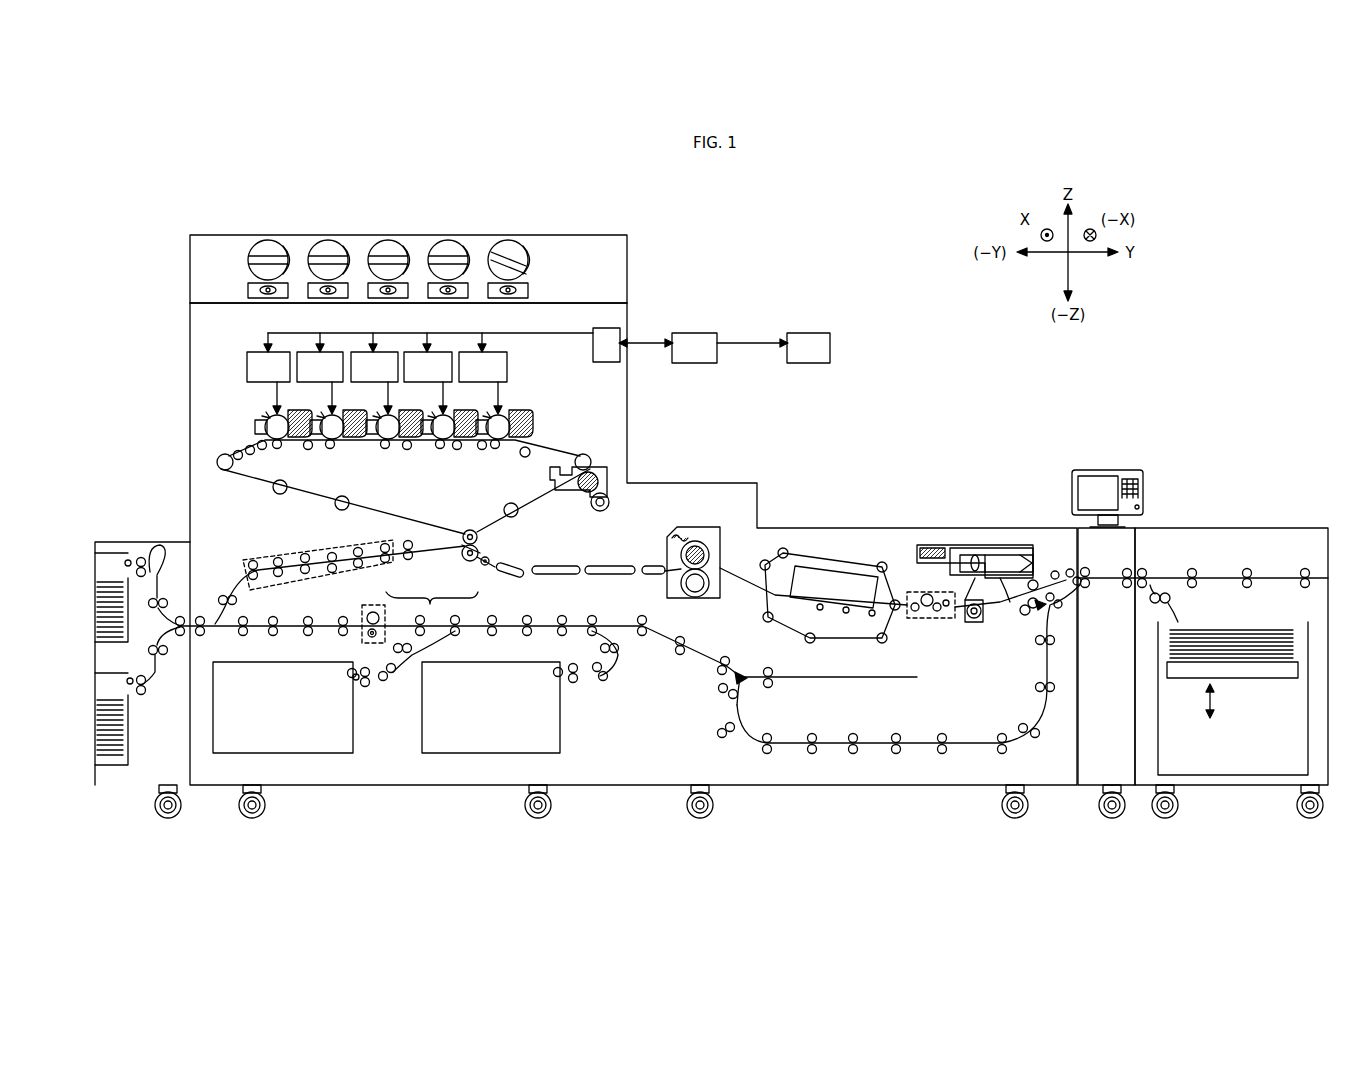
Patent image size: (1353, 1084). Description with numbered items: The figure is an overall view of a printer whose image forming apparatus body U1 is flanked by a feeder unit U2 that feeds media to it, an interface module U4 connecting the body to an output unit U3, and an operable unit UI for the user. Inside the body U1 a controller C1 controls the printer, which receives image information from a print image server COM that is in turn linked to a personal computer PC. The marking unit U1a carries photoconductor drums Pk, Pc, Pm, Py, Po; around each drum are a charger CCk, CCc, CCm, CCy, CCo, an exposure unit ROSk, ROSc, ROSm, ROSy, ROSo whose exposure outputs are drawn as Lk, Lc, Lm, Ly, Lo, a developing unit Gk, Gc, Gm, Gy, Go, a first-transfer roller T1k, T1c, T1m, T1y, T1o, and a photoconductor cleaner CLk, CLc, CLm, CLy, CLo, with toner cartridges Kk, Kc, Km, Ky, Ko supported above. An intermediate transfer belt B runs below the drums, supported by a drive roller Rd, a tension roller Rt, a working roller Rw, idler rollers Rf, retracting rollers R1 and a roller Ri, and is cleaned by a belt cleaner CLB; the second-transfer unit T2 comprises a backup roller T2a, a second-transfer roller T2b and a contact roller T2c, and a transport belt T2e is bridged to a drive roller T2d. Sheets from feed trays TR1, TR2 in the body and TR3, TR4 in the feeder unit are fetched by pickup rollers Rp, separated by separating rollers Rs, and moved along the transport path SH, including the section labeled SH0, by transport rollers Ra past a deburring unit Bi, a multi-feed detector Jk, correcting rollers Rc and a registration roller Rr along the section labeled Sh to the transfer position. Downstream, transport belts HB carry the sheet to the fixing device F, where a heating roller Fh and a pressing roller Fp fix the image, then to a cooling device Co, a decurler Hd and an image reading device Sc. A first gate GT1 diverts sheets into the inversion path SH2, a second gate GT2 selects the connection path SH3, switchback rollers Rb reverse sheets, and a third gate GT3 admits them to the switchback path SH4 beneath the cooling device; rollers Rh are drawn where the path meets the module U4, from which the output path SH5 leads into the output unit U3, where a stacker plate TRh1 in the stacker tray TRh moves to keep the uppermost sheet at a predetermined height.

The image forming apparatus body U1 is at (666, 266).
The marking unit U1a is at (198, 355).
The feeder unit U2 is at (130, 535).
The output unit U3 is at (1240, 530).
The interface module U4 is at (1132, 532).
The controller C1 is at (616, 334).
The print image server COM is at (704, 340).
The personal computer PC is at (820, 338).
The operable unit UI is at (1100, 468).
The toner cartridge Kk is at (268, 246).
The toner cartridge Kc is at (328, 246).
The toner cartridge Km is at (388, 246).
The toner cartridge Ky is at (448, 246).
The toner cartridge Ko is at (508, 246).
The exposure unit ROSk is at (252, 350).
The exposure unit ROSc is at (303, 350).
The exposure unit ROSm is at (358, 350).
The exposure unit ROSy is at (412, 350).
The exposure unit ROSo is at (468, 350).
The laser beam (black) Lk is at (274, 363).
The laser beam (cyan) Lc is at (328, 363).
The laser beam (magenta) Lm is at (385, 363).
The laser beam (yellow) Ly is at (438, 363).
The laser beam (clear) Lo is at (496, 363).
The photoconductor drum Pk is at (281, 414).
The photoconductor drum Pc is at (336, 414).
The photoconductor drum Pm is at (391, 414).
The photoconductor drum Py is at (446, 414).
The photoconductor drum Po is at (501, 414).
The charger CCk is at (267, 417).
The charger CCc is at (322, 417).
The charger CCm is at (378, 417).
The charger CCy is at (433, 417).
The charger CCo is at (488, 417).
The photoconductor cleaner CLk is at (254, 428).
The photoconductor cleaner CLc is at (318, 436).
The photoconductor cleaner CLm is at (373, 436).
The photoconductor cleaner CLy is at (428, 436).
The photoconductor cleaner CLo is at (508, 432).
The developing unit Gk is at (299, 439).
The developing unit Gc is at (355, 439).
The developing unit Gm is at (411, 439).
The developing unit Gy is at (466, 439).
The developing unit Go is at (523, 416).
The first-transfer roller T1k is at (274, 450).
The first-transfer roller T1c is at (331, 450).
The first-transfer roller T1m is at (386, 450).
The first-transfer roller T1y is at (440, 450).
The first-transfer roller T1o is at (496, 450).
The intermediate transfer belt B is at (406, 520).
The drive roller Rd is at (592, 462).
The tension roller Rt is at (217, 458).
The working roller Rw is at (349, 505).
The idler roller Rf is at (519, 511).
The idler roller Ri is at (224, 472).
The retracting roller R1 is at (262, 451).
The belt cleaner CLB is at (573, 506).
The second-transfer unit T2 is at (432, 606).
The backup roller T2a is at (465, 548).
The second-transfer roller T2b is at (462, 569).
The contact roller T2c is at (462, 540).
The drive roller T2d is at (485, 568).
The transport belt T2e is at (480, 555).
The sheet transport path Sh is at (341, 550).
The multi-feed detector Jk is at (243, 558).
The transport roller Ra is at (238, 601).
The correcting roller Rc is at (346, 570).
The registration roller Rr is at (387, 592).
The deburring unit Bi is at (361, 640).
The transport path SH is at (178, 612).
The feed transport path SH0 is at (232, 633).
The inversion path SH2 is at (1046, 686).
The connection path SH3 is at (1062, 614).
The switchback path SH4 is at (845, 679).
The output path SH5 is at (1160, 574).
The separating roller Rs is at (148, 556).
The pickup roller Rp is at (124, 564).
The feed tray TR1 is at (305, 756).
The feed tray TR2 is at (480, 756).
The feed tray TR3 is at (98, 770).
The feed tray TR4 is at (98, 632).
The transport belt HB is at (519, 578).
The fixing device F is at (666, 538).
The heating roller Fh is at (696, 542).
The pressing roller Fp is at (692, 598).
The cooling device Co is at (844, 552).
The image reading device Sc is at (963, 546).
The decurler Hd is at (927, 620).
The first gate GT1 is at (975, 623).
The second gate GT2 is at (1040, 612).
The third gate GT3 is at (742, 687).
The discharge roller Rh is at (1088, 586).
The switchback roller Rb is at (773, 670).
The stacker tray TRh is at (1230, 778).
The stacker plate TRh1 is at (1244, 672).